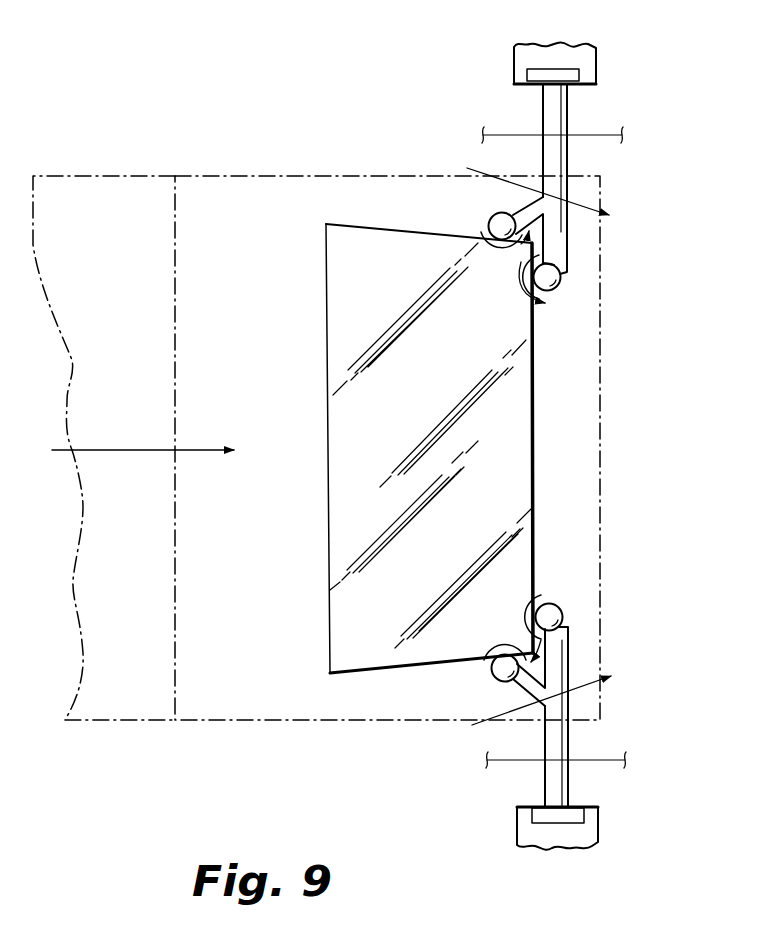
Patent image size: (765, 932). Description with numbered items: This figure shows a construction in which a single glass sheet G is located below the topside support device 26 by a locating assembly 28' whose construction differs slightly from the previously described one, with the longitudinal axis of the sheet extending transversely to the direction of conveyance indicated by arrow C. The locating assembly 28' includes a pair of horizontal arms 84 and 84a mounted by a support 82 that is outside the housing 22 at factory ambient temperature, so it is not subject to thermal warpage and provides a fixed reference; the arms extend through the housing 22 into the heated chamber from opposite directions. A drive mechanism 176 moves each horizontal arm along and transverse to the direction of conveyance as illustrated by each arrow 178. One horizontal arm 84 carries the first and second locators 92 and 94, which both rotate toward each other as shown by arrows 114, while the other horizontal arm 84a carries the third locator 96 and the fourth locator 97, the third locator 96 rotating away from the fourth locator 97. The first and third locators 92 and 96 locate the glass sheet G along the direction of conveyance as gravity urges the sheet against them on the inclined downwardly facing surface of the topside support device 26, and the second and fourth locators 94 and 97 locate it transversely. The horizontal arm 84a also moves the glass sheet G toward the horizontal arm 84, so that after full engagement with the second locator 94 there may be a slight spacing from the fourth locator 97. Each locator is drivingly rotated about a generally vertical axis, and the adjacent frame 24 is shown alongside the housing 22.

The housing 22 is at (509, 126).
The cabinet frame 24 is at (152, 727).
The topside support device 26 is at (204, 727).
The locating assembly 28' is at (595, 787).
The support 82 is at (596, 63).
The horizontal arm 84 is at (545, 713).
The horizontal arm 84a is at (575, 188).
The first locator 92 is at (565, 610).
The second locator 94 is at (491, 673).
The third locator 96 is at (565, 282).
The fourth locator 97 is at (497, 213).
The arrows 114 is at (497, 245).
The drive mechanism 176 is at (575, 86).
The arrow 178 is at (592, 204).
The glass sheet G is at (347, 499).
The arrow C is at (86, 456).